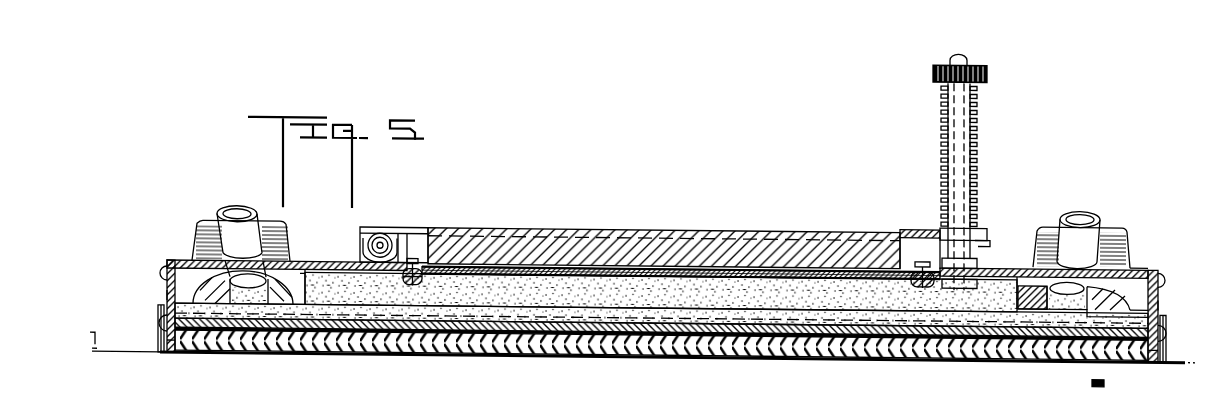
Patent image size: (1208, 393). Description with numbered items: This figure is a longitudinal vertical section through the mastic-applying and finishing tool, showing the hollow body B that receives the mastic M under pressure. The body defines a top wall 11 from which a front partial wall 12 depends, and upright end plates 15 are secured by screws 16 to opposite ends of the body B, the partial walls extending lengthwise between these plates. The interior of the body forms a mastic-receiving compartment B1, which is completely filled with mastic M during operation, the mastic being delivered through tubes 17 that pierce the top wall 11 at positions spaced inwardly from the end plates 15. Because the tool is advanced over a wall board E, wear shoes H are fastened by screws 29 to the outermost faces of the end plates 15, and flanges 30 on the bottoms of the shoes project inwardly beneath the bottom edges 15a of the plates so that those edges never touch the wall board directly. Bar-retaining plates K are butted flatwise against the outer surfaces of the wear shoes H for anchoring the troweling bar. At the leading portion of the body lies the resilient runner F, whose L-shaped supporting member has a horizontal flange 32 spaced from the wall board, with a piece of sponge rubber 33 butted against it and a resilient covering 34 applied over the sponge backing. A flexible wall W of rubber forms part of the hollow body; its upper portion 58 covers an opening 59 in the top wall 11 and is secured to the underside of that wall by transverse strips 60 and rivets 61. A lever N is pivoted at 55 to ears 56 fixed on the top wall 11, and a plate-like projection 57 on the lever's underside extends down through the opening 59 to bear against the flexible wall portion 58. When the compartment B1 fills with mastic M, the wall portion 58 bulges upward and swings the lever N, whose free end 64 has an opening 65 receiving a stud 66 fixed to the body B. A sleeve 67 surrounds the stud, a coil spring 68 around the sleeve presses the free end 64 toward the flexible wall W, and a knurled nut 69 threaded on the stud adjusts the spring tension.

The top wall 11 is at (183, 258).
The front partial wall 12 is at (597, 353).
The upright plates 15 is at (167, 260).
The bottom edges 15a is at (160, 353).
The screws 16 is at (161, 270).
The tubes 17 is at (229, 206).
The screws 29 is at (160, 320).
The flanges 30 is at (181, 354).
The horizontal flange 32 is at (872, 331).
The sponge rubber 33 is at (300, 352).
The resilient covering 34 is at (520, 325).
The pivot 55 is at (379, 232).
The ears 56 is at (408, 232).
The plate-like projection 57 is at (541, 243).
The upper portion of the flexible wall 58 is at (731, 263).
The opening 59 is at (916, 222).
The transverse strips 60 is at (405, 280).
The rivets 61 is at (416, 282).
The free end 64 is at (980, 230).
The opening 65 is at (978, 237).
The stud 66 is at (951, 52).
The sleeve 67 is at (965, 105).
The coil spring 68 is at (941, 112).
The knurled nut 69 is at (986, 63).
The hollow body B is at (1143, 247).
The mastic-receiving compartment B1 is at (742, 300).
The wall board E is at (114, 337).
The resilient runner F is at (425, 352).
The wear shoes H is at (164, 292).
The bar-retaining plates K is at (156, 339).
The mastic M is at (326, 272).
The lever N is at (648, 220).
The flexible wall W is at (797, 263).